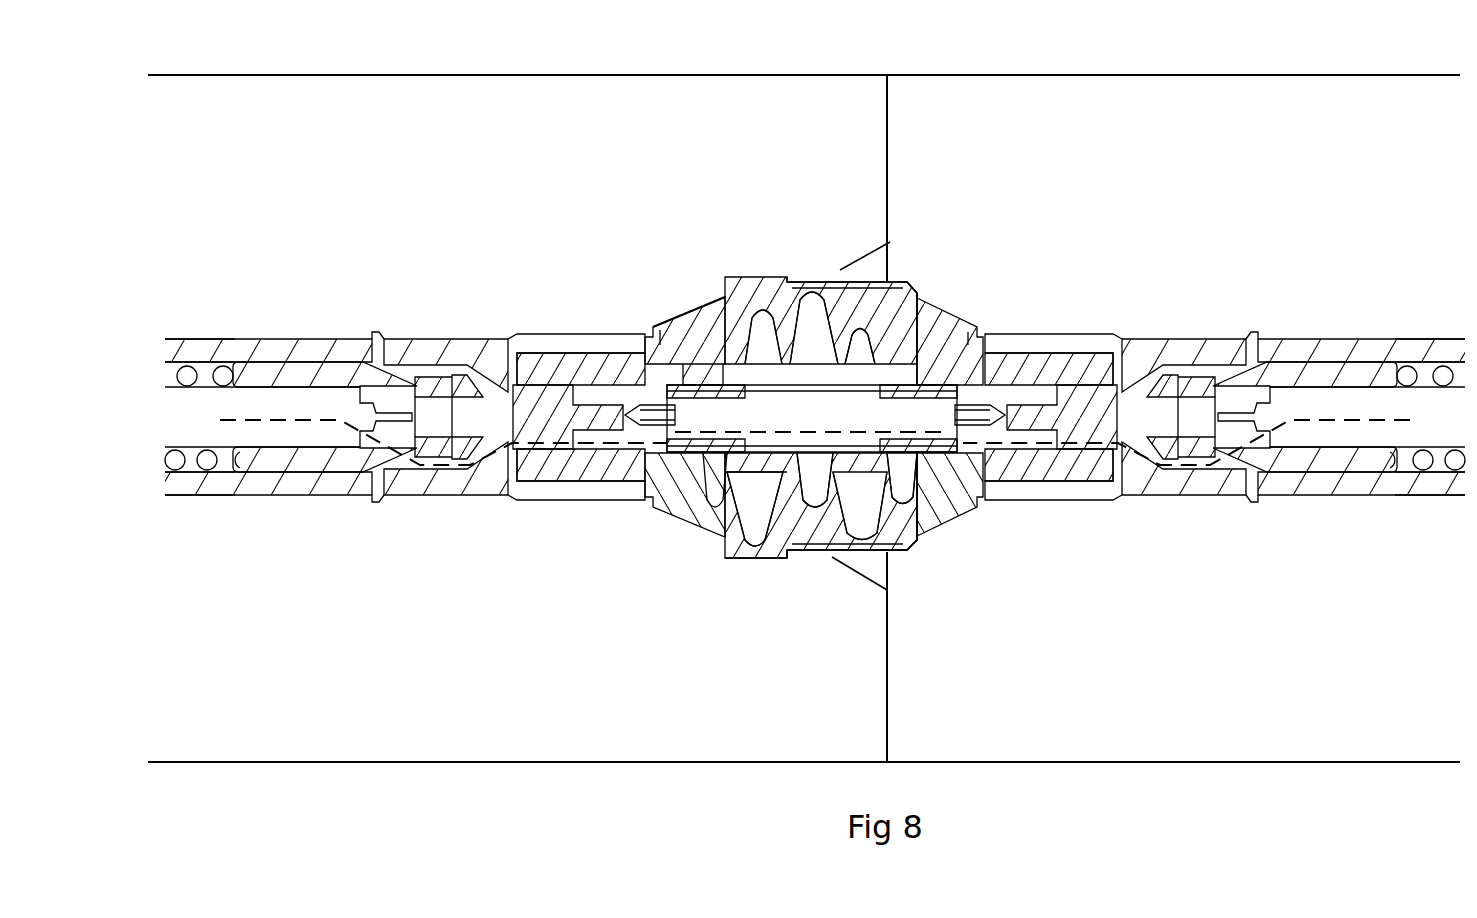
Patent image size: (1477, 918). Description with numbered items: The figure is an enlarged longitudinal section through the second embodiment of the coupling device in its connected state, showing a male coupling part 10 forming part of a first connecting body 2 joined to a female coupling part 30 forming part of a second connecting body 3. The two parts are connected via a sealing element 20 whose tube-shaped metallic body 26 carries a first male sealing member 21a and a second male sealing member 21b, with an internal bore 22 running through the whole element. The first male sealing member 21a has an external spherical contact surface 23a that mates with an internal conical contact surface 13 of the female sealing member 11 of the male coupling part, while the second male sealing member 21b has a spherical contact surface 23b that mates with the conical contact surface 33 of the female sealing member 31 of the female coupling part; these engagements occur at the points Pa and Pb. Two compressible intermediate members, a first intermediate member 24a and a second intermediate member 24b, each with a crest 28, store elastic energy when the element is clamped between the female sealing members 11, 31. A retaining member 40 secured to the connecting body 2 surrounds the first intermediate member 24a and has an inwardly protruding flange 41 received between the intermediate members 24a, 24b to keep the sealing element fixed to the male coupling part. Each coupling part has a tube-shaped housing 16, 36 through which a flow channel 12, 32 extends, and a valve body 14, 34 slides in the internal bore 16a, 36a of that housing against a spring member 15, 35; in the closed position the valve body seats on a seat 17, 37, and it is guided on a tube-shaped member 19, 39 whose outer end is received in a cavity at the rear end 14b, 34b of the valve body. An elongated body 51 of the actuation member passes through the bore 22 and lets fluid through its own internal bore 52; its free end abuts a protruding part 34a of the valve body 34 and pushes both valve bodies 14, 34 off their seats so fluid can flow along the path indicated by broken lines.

The connecting body 2 is at (1093, 84).
The connecting body 3 is at (608, 84).
The male coupling part 10 is at (1172, 249).
The female sealing member 11 is at (998, 322).
The flow channel 12 is at (1365, 345).
The internal conical contact surface 13 is at (962, 505).
The valve body 14 is at (1192, 378).
The rear end of valve body 14b is at (1334, 472).
The spring member 15 is at (1422, 470).
The tube-shaped housing 16 is at (1306, 345).
The internal bore 16a is at (1420, 342).
The seat 17 is at (1128, 480).
The tube-shaped member 19 is at (1412, 398).
The sealing element 20 is at (773, 279).
The first male sealing member 21a is at (950, 335).
The second male sealing member 21b is at (638, 335).
The internal bore 22 is at (900, 318).
The external spherical contact surface 23a is at (965, 520).
The external spherical contact surface 23b is at (680, 512).
The first intermediate member 24a is at (905, 550).
The second intermediate member 24b is at (745, 552).
The tube-shaped metallic body 26 is at (815, 362).
The crest 28 is at (752, 552).
The female coupling part 30 is at (554, 237).
The female sealing member 31 is at (688, 328).
The flow channel 32 is at (308, 345).
The internal conical contact surface 33 is at (655, 510).
The valve body 34 is at (437, 378).
The protruding part 34a is at (555, 350).
The rear end of valve body 34b is at (298, 472).
The spring member 35 is at (206, 470).
The tube-shaped housing 36 is at (252, 345).
The internal bore 36a is at (203, 342).
The seat 37 is at (495, 498).
The tube-shaped member 39 is at (216, 398).
The retaining member 40 is at (815, 290).
The inwardly protruding flange 41 is at (810, 548).
The elongated body 51 is at (788, 392).
The internal bore 52 is at (716, 383).
The engagement point Pa is at (968, 332).
The engagement point Pb is at (672, 330).